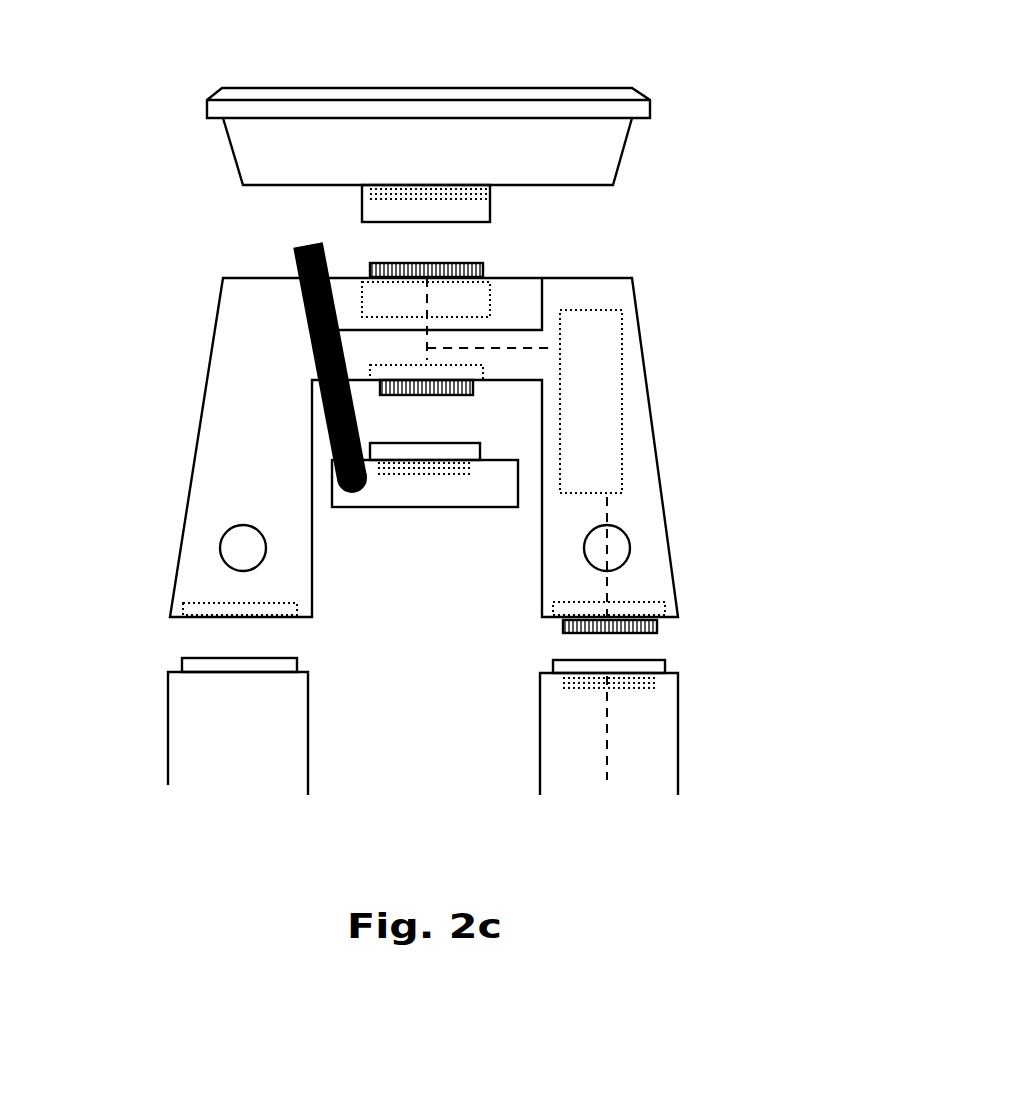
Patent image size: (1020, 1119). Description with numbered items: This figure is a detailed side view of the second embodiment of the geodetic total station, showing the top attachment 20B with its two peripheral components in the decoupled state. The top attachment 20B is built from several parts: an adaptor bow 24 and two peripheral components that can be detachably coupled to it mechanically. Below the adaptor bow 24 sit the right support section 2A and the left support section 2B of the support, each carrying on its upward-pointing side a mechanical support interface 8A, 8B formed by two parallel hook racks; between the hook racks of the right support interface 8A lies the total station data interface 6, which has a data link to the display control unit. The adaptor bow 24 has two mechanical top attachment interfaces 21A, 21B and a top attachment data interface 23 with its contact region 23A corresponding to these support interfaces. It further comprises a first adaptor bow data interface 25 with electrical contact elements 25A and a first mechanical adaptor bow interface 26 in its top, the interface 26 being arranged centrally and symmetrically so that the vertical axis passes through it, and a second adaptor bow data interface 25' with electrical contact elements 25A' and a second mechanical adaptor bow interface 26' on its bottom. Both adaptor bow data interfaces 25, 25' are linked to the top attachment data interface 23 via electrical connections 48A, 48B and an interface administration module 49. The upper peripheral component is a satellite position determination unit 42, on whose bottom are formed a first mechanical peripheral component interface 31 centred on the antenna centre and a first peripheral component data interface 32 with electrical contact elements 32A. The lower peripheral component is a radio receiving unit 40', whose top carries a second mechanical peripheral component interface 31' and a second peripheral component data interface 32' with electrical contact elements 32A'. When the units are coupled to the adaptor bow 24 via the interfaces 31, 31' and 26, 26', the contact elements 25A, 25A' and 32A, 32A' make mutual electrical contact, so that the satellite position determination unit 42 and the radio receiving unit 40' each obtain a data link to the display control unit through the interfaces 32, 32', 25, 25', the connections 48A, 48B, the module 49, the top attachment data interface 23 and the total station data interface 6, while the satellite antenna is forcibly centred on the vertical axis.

The top attachment 20B is at (696, 46).
The satellite position determination unit 42 is at (325, 74).
The first mechanical peripheral component interface 31 is at (325, 218).
The first peripheral component data interface 32 is at (324, 165).
The electrical contact elements 32A is at (267, 190).
The adaptor bow 24 is at (218, 487).
The first mechanical adaptor bow interface 26 is at (506, 291).
The first adaptor bow data interface 25 is at (526, 222).
The electrical contact elements 25A is at (538, 242).
The electrical connection 48B is at (534, 349).
The interface administration module 49 is at (590, 455).
The electrical connection 48A is at (602, 507).
The second mechanical adaptor bow interface 26' is at (287, 334).
The second adaptor bow data interface 25' is at (282, 361).
The electrical contact elements 25A' is at (271, 390).
The second mechanical peripheral component interface 31' is at (425, 514).
The second peripheral component data interface 32' is at (439, 524).
The electrical contact elements 32A' is at (453, 555).
The radio receiving unit 40' is at (408, 466).
The mechanical top attachment interface 21B is at (202, 603).
The mechanical top attachment interface 21A is at (638, 605).
The top attachment data interface 23 is at (654, 617).
The brush bristles 23A is at (637, 627).
The mechanical support interface 8B is at (198, 665).
The left support section 2B is at (195, 773).
The mechanical support interface 8A is at (638, 665).
The total station data interface 6 is at (638, 680).
The right support section 2A is at (653, 750).